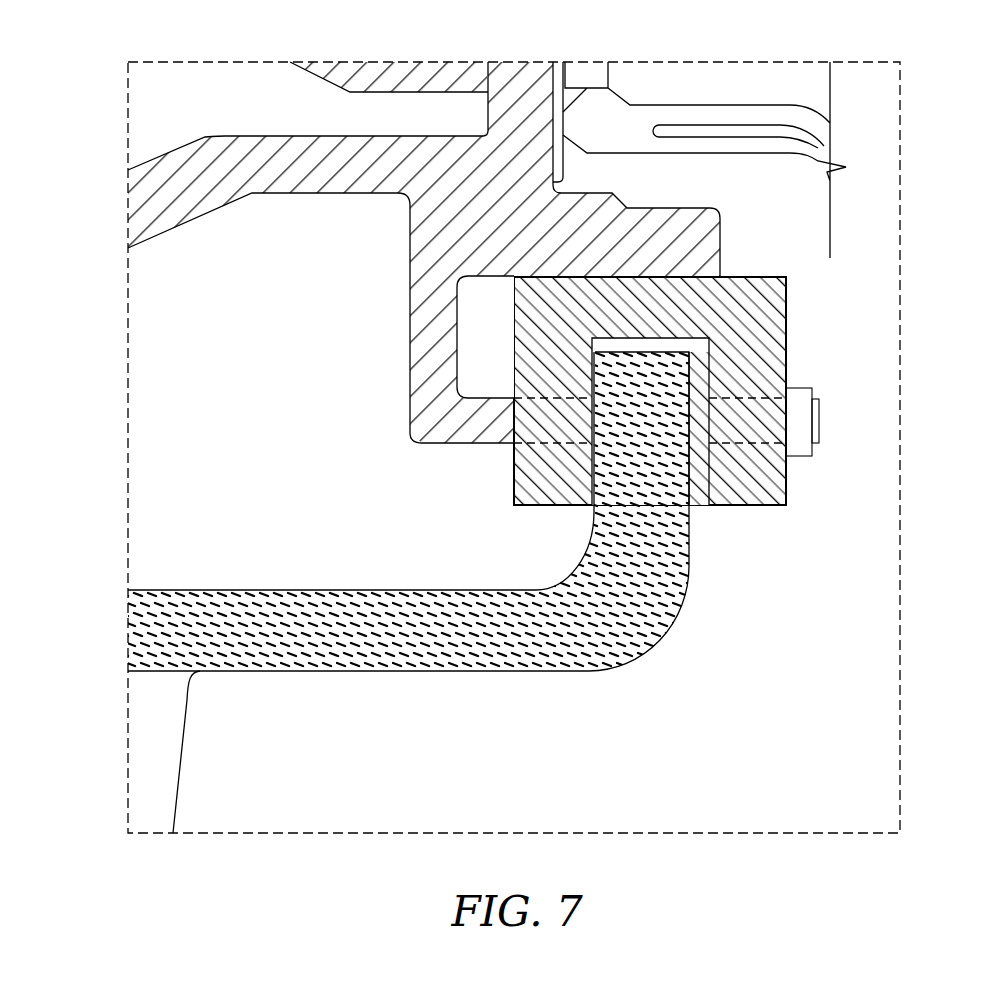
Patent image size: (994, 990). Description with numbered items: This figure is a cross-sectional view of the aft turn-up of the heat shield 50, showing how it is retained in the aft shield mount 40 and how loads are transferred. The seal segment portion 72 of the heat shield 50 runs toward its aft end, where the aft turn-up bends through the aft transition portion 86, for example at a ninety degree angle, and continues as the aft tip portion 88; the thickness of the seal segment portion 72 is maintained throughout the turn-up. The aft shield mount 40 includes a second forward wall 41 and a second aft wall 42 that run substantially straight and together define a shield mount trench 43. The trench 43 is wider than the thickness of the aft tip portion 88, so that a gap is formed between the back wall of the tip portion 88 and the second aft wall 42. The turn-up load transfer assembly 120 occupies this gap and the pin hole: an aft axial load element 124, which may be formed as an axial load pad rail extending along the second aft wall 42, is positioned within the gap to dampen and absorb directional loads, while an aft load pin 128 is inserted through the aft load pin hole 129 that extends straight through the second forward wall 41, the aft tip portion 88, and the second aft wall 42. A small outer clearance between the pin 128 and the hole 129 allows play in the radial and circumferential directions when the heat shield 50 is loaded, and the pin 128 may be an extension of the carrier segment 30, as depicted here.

The carrier segment 30 is at (258, 135).
The aft shield mount 40 is at (755, 282).
The second forward wall 41 is at (552, 395).
The second aft wall 42 is at (770, 478).
The shield mount trench 43 is at (663, 340).
The heat shield 50 is at (195, 572).
The seal segment portion 72 is at (335, 660).
The aft transition portion 86 is at (629, 648).
The aft tip portion 88 is at (636, 445).
The turn-up load transfer assembly 120 is at (160, 422).
The aft axial load element 124 is at (696, 501).
The aft load pin 128 is at (788, 422).
The aft load pin hole 129 is at (767, 398).